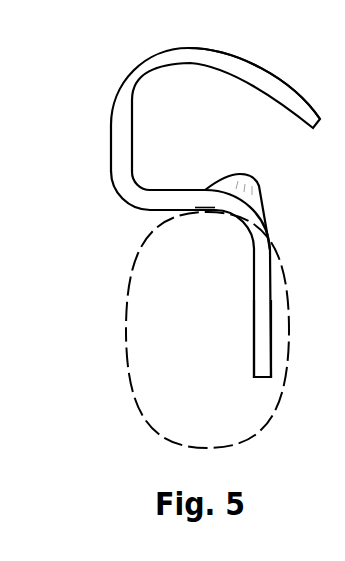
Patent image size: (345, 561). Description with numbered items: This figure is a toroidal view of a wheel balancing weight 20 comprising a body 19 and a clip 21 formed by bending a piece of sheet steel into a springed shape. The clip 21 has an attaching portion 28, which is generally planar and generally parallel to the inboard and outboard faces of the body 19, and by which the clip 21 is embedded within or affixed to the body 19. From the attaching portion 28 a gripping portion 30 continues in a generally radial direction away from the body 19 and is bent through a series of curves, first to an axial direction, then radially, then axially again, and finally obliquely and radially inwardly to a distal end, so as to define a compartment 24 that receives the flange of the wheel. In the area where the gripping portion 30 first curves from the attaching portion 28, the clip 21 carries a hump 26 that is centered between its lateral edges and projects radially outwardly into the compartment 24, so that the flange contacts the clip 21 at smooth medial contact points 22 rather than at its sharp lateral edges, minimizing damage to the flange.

The body 19 is at (171, 340).
The weight 20 is at (65, 236).
The clip 21 is at (84, 136).
The contact point 22 is at (270, 293).
The compartment 24 is at (200, 126).
The hump 26 is at (263, 201).
The attaching portion 28 is at (272, 328).
The gripping portion 30 is at (199, 50).